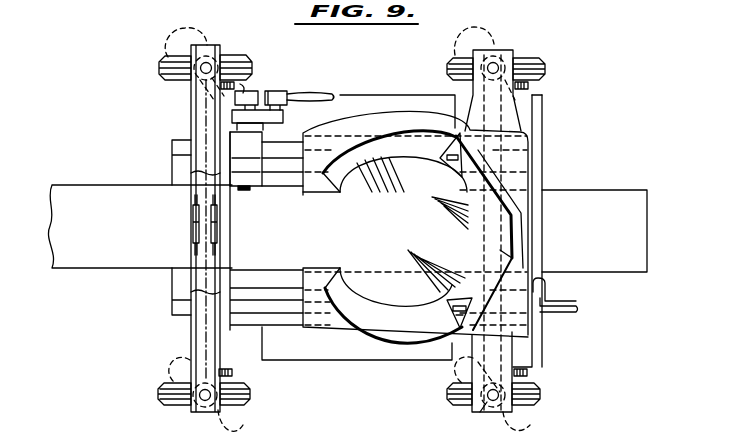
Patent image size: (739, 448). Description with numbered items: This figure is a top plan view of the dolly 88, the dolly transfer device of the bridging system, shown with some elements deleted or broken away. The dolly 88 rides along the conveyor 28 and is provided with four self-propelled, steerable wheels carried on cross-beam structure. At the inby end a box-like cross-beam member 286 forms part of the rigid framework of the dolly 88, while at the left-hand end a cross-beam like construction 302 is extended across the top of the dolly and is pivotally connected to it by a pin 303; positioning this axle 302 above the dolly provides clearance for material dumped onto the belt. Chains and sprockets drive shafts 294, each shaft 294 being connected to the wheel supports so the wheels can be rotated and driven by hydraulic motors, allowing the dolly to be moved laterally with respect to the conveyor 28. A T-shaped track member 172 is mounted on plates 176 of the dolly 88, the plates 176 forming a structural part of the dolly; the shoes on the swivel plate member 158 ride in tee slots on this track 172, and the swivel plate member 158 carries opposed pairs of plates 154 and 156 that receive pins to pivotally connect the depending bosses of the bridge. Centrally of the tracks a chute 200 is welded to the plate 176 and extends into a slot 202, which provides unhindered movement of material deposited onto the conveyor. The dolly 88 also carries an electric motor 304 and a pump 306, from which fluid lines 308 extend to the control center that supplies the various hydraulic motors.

The conveyor 28 is at (114, 190).
The dolly 88 is at (400, 103).
The plates 154 is at (453, 330).
The plates 156 is at (527, 147).
The swivel plate member 158 is at (507, 213).
The track member 172 is at (368, 132).
The plates 176 is at (348, 336).
The chute 200 is at (423, 187).
The slot 202 is at (327, 190).
The cross-beam member 286 is at (505, 340).
The shaft 294 is at (492, 407).
The cross-beam like construction 302 is at (207, 335).
The pin 303 is at (203, 237).
The electric motor 304 is at (257, 135).
The pump 306 is at (277, 93).
The fluid lines 308 is at (330, 93).